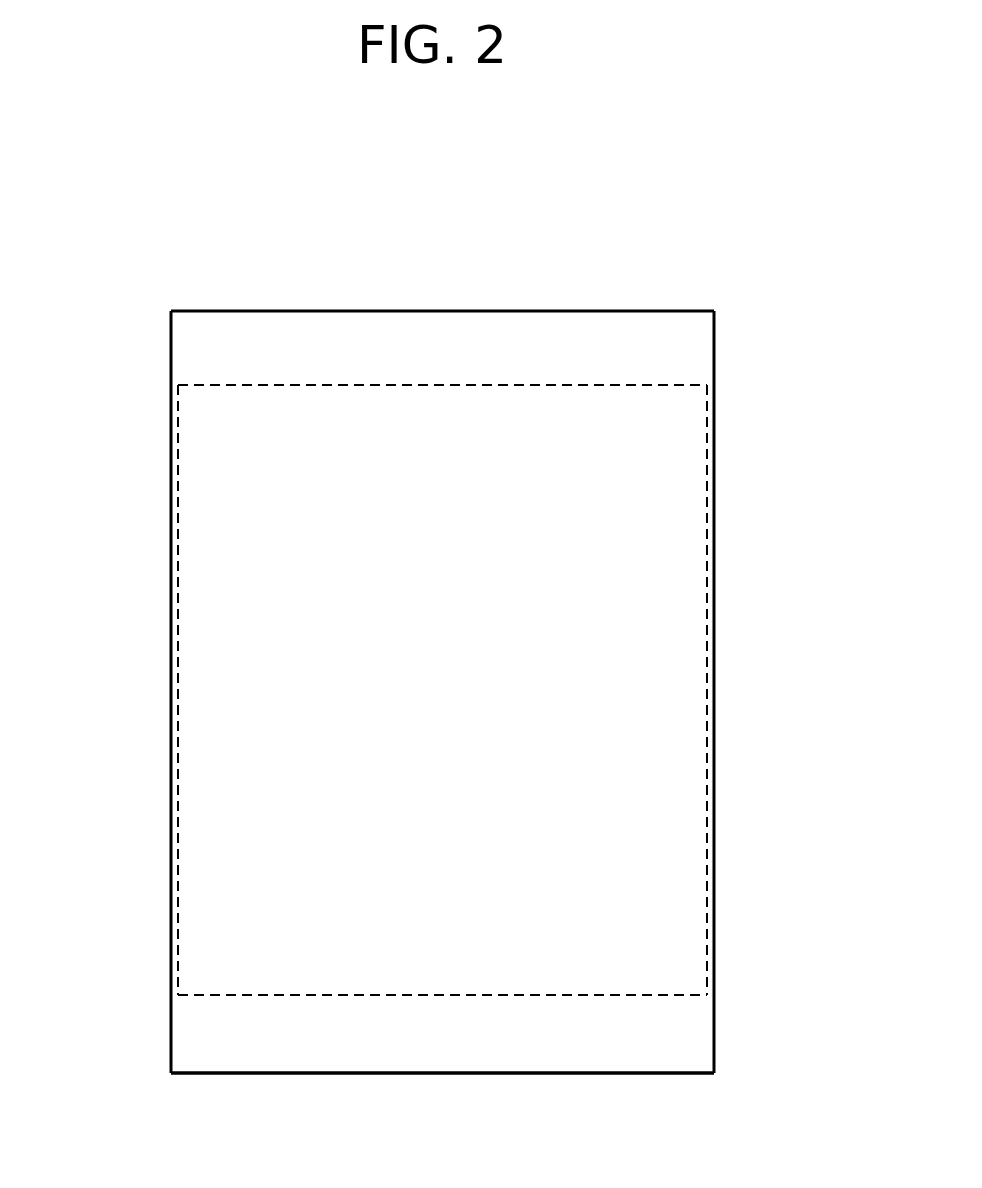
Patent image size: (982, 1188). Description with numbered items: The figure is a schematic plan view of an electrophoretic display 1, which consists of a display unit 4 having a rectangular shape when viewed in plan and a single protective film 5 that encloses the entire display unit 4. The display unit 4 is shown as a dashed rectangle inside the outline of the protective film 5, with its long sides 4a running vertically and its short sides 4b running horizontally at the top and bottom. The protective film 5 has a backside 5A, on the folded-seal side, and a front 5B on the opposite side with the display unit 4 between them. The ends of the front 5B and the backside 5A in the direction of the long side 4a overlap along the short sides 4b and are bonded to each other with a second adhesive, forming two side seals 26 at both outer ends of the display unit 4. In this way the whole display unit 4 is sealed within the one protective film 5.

The electrophoretic display 1 is at (460, 627).
The protective film 5 is at (393, 680).
The display unit 4 is at (448, 680).
The side seals 26 is at (324, 328).
The long side 4a is at (172, 633).
The short sides 4b is at (421, 378).
The backside 5A is at (207, 1034).
The front 5B is at (222, 553).